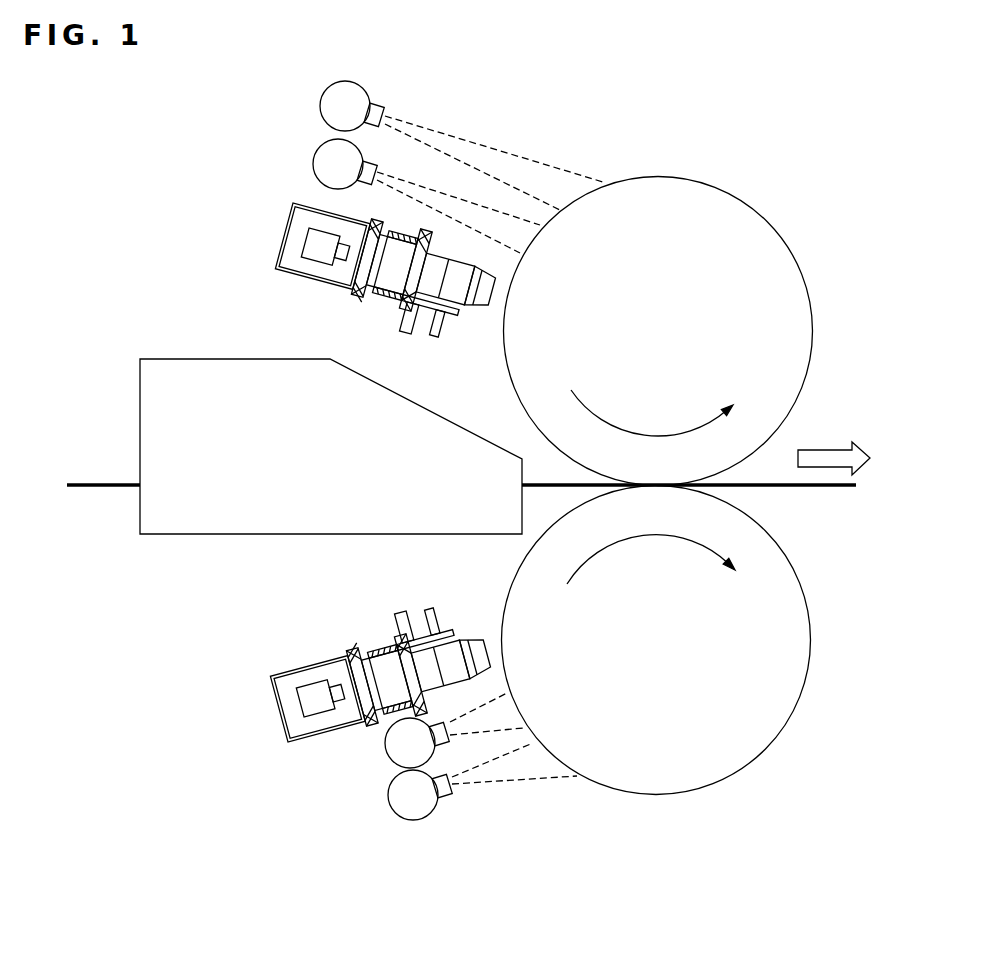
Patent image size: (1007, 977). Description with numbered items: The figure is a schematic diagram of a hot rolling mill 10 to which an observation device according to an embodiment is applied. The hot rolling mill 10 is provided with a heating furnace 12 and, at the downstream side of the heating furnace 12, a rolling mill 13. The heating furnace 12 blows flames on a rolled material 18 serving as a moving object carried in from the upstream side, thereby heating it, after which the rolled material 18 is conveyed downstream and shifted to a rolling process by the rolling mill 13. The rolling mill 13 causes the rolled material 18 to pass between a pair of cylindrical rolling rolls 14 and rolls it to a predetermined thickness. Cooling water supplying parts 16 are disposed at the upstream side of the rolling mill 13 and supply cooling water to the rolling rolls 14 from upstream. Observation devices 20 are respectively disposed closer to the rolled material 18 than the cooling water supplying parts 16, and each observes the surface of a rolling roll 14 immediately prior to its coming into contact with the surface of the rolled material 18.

The hot rolling mill 10 is at (816, 160).
The heating furnace 12 is at (149, 418).
The rolling mill 13 is at (696, 163).
The rolling roll 14 is at (800, 330).
The cooling water supplying part 16 is at (328, 102).
The rolled material 18 is at (823, 488).
The observation device 20 is at (272, 225).